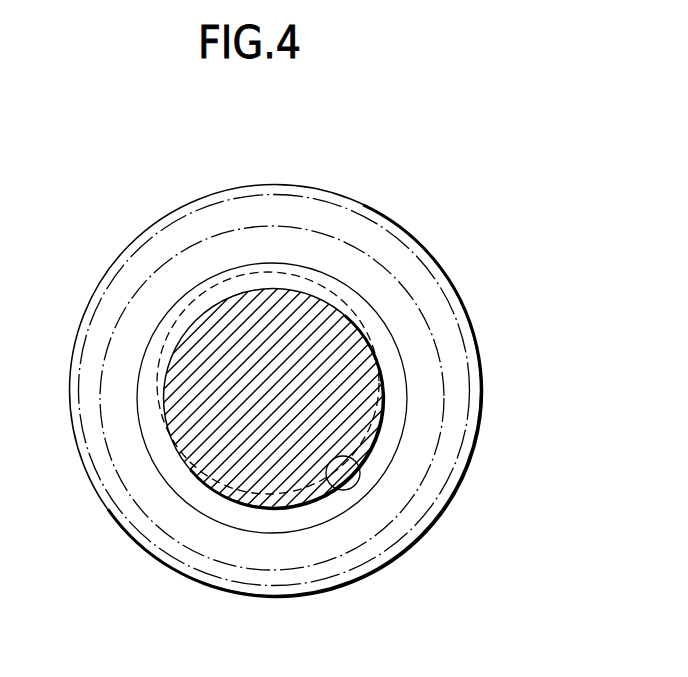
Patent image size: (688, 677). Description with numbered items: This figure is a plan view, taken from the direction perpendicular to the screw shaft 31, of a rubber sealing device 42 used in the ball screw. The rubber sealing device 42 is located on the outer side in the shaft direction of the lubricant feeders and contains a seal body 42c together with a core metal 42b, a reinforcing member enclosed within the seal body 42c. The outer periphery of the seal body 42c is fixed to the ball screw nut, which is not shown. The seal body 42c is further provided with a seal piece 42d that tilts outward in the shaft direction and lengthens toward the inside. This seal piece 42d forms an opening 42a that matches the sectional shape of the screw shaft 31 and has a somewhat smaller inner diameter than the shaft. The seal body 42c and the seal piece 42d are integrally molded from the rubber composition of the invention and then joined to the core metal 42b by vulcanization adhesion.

The rubber sealing device 42 is at (357, 206).
The opening 42a is at (358, 458).
The core metal 42b is at (408, 268).
The seal body 42c is at (417, 330).
The seal piece 42d is at (405, 392).
The screw shaft 31 is at (200, 353).